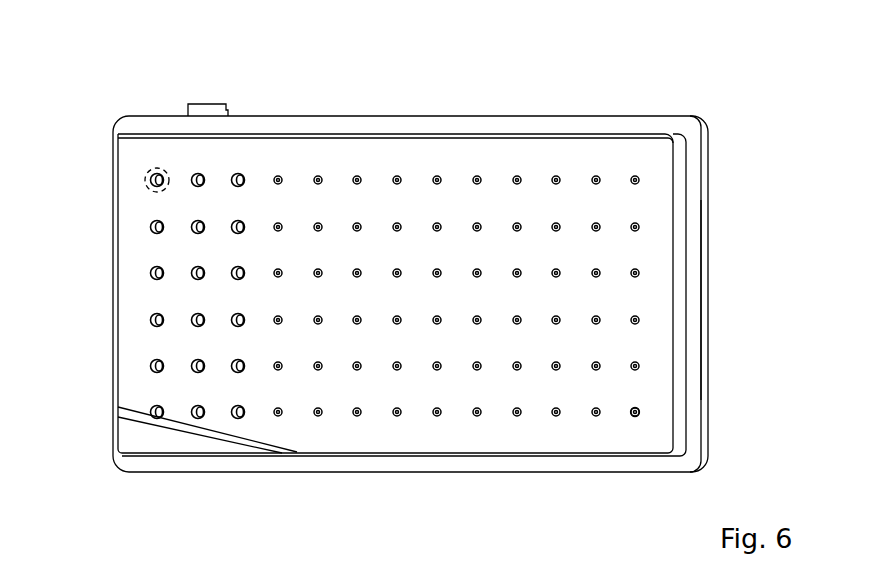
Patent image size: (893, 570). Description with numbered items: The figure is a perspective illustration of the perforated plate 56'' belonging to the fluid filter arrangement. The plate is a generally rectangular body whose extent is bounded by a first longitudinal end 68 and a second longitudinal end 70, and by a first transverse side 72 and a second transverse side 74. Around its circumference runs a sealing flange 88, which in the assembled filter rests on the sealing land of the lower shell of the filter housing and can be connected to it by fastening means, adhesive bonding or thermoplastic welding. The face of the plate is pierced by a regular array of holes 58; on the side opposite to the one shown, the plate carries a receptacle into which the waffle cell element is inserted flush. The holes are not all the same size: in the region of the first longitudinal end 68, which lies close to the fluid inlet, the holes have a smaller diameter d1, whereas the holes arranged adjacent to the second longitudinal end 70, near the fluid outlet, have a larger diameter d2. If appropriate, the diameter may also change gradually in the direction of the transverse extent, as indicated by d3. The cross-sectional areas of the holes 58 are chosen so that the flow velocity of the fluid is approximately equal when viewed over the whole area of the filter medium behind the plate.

The perforated plate 56'' is at (410, 240).
The second transverse side 74 is at (353, 134).
The holes 58 is at (477, 176).
The circumferential sealing flange 88 is at (693, 226).
The first longitudinal end 68 is at (694, 298).
The second longitudinal end 70 is at (113, 307).
The first transverse side 72 is at (446, 474).
The smaller hole diameter d1 is at (641, 412).
The larger hole diameter d2 is at (118, 408).
The gradual hole diameter change d3 is at (145, 181).